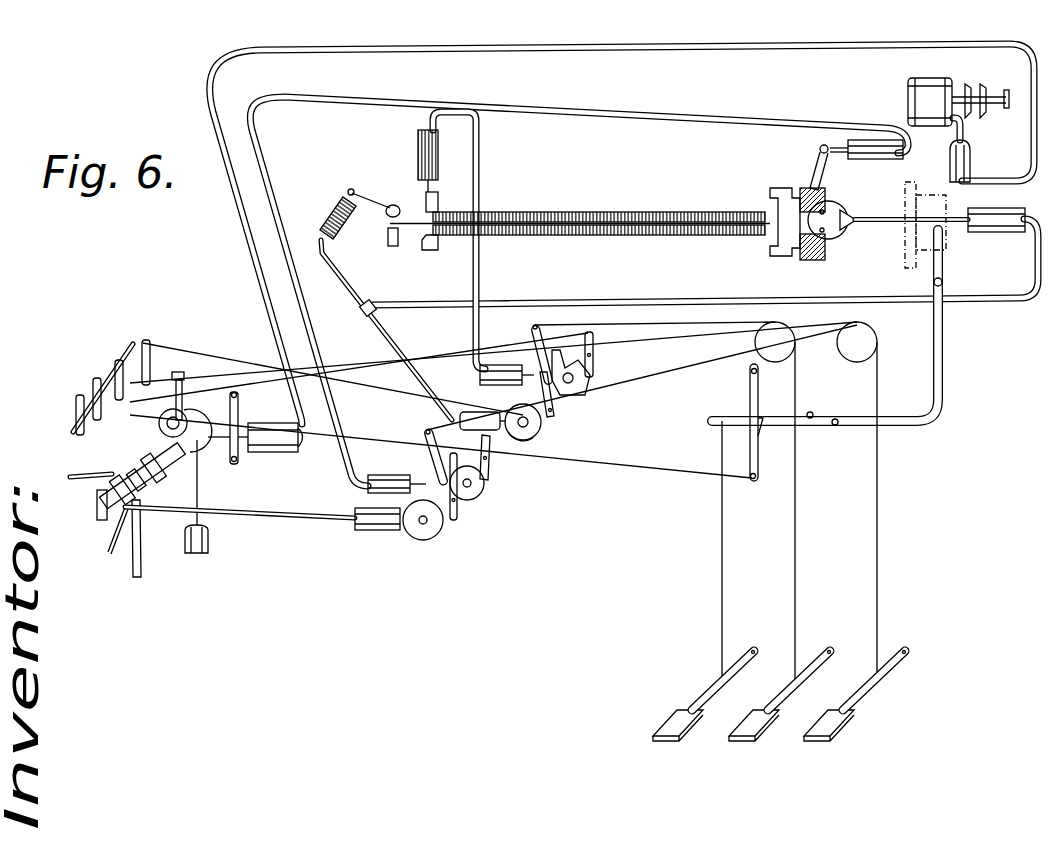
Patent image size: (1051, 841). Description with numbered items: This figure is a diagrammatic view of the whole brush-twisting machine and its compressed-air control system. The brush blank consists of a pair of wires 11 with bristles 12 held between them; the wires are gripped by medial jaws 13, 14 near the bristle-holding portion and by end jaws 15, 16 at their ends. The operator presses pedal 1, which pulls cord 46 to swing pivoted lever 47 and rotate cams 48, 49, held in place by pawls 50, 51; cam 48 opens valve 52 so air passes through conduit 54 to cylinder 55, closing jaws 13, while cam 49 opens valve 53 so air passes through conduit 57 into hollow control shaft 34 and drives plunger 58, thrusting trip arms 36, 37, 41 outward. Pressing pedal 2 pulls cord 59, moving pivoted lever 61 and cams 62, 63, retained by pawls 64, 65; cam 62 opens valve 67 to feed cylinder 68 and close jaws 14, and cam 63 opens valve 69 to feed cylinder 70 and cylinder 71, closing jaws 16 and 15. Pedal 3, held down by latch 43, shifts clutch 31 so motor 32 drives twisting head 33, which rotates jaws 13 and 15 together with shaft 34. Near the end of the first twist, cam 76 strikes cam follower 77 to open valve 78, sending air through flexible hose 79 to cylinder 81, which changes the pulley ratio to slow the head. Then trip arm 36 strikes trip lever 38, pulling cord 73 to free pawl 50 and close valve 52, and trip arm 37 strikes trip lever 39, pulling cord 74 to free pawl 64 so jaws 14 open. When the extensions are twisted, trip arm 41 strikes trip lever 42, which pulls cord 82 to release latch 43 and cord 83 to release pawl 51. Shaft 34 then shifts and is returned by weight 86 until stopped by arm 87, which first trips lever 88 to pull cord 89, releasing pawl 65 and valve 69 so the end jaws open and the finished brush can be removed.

The pedal 1 is at (840, 720).
The pedal 2 is at (758, 724).
The pedal 3 is at (672, 723).
The wires 11 is at (566, 238).
The bristles 12 is at (660, 200).
The medial jaws 13 is at (770, 198).
The medial jaws 14 is at (438, 208).
The end jaws 15 is at (838, 212).
The end jaws 16 is at (400, 198).
The clutch 31 is at (903, 260).
The motor 32 is at (908, 94).
The twisting head 33 is at (800, 255).
The control shaft 34 is at (182, 470).
The trip arm 36 is at (143, 572).
The trip arm 37 is at (108, 556).
The trip lever 38 is at (76, 435).
The trip lever 39 is at (97, 420).
The trip arm 41 is at (72, 482).
The trip lever 42 is at (120, 396).
The latch 43 is at (766, 485).
The cord 46 is at (879, 540).
The pivoted lever 47 is at (428, 450).
The cam 48 is at (484, 500).
The cam 49 is at (430, 540).
The pawl 50 is at (492, 468).
The pawl 51 is at (462, 518).
The valve 52 is at (366, 492).
The valve 53 is at (356, 532).
The conduit 54 is at (322, 330).
The cylinder 55 is at (866, 162).
The conduit 57 is at (265, 522).
The plunger 58 is at (100, 522).
The cord 59 is at (797, 548).
The pivoted lever 61 is at (530, 328).
The cam 62 is at (586, 380).
The cam 63 is at (542, 427).
The pawl 64 is at (594, 352).
The pawl 65 is at (558, 405).
The valve 67 is at (480, 378).
The cylinder 68 is at (418, 150).
The valve 69 is at (490, 412).
The cylinder 70 is at (336, 236).
The cylinder 71 is at (1000, 233).
The cord 73 is at (370, 437).
The cord 74 is at (445, 358).
The cam 76 is at (158, 425).
The cam follower 77 is at (238, 462).
The valve 78 is at (298, 453).
The flexible hose 79 is at (262, 296).
The cylinder 81 is at (971, 160).
The cord 82 is at (272, 392).
The cord 83 is at (335, 440).
The weight 86 is at (210, 548).
The arm 87 is at (184, 374).
The lever 88 is at (144, 340).
The cord 89 is at (402, 360).